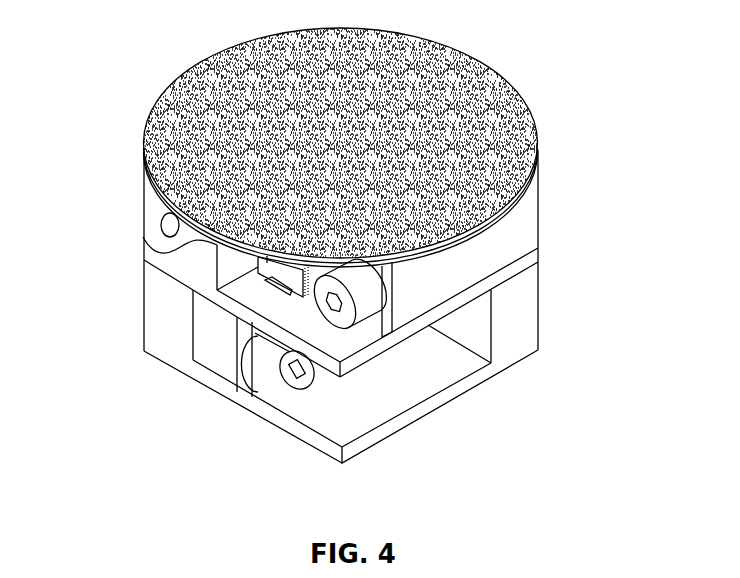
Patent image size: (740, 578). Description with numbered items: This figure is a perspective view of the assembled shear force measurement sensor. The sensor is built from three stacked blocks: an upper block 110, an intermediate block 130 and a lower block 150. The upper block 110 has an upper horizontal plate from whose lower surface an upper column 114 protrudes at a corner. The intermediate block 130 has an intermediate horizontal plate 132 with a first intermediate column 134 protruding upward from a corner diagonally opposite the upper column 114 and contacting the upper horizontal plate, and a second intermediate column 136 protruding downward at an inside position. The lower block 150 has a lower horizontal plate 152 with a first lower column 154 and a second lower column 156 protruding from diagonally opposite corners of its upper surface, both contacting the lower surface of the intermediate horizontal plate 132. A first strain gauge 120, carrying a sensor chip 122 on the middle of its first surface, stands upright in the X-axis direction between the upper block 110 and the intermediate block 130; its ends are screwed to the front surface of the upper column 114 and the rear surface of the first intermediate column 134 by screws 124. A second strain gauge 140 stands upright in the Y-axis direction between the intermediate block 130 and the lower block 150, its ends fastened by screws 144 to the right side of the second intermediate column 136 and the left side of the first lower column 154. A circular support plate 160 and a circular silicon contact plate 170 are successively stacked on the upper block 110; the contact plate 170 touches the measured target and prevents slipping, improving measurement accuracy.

The upper block 110 is at (530, 215).
The upper column 114 is at (497, 252).
The first strain gauge 120 is at (410, 284).
The sensor chip 122 is at (267, 258).
The screw 124 is at (366, 312).
The intermediate block 130 is at (205, 360).
The intermediate horizontal plate 132 is at (277, 307).
The first intermediate column 134 is at (153, 258).
The second intermediate column 136 is at (197, 323).
The second strain gauge 140 is at (263, 400).
The screw 144 is at (300, 382).
The lower block 150 is at (490, 388).
The lower horizontal plate 152 is at (420, 388).
The first lower column 154 is at (517, 333).
The second lower column 156 is at (157, 295).
The circular support plate 160 is at (143, 237).
The circular silicon contact plate 170 is at (175, 97).